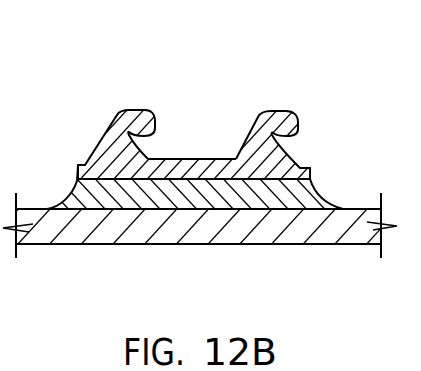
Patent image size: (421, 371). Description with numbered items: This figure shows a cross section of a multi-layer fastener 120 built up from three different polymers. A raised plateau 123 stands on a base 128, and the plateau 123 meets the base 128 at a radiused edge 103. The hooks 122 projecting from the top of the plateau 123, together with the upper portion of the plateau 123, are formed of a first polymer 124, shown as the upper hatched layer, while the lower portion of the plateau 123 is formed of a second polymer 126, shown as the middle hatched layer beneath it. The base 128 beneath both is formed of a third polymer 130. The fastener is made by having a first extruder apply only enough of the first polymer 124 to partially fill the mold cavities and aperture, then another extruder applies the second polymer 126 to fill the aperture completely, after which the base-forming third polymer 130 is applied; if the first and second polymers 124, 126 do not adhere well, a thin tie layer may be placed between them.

The fastener 120 is at (190, 60).
The hooks 122 is at (135, 111).
The plateau 123 is at (324, 164).
The first polymer 124 is at (198, 158).
The second polymer 126 is at (319, 198).
The base 128 is at (73, 246).
The third polymer 130 is at (212, 246).
The radiused edge 103 is at (65, 200).